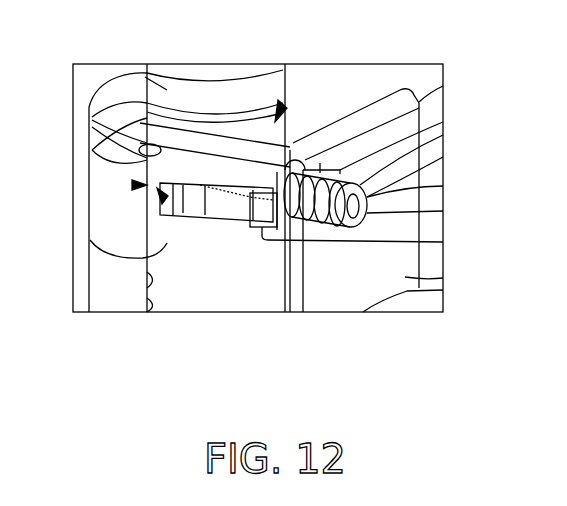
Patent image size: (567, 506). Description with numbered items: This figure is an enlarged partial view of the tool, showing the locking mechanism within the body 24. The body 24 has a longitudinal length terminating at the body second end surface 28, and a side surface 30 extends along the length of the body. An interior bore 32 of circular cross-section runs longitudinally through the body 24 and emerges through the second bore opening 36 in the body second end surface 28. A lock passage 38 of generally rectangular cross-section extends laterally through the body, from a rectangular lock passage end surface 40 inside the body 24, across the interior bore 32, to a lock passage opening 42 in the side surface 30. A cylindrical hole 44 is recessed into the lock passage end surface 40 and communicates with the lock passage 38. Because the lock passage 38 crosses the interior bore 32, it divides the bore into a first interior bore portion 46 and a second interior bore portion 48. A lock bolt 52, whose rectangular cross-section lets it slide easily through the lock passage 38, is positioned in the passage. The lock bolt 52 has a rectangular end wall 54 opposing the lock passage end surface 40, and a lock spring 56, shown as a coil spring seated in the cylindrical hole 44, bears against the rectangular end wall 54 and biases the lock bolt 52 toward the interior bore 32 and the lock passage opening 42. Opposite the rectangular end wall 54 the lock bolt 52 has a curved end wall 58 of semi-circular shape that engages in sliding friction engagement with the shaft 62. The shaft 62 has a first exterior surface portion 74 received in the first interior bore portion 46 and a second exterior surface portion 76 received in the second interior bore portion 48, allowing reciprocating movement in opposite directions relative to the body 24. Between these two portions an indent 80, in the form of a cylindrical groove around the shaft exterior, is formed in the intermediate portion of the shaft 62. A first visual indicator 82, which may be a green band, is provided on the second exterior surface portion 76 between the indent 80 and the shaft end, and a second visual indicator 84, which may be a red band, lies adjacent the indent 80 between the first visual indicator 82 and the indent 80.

The body 24 is at (443, 86).
The body second end surface 28 is at (385, 95).
The side surface 30 is at (443, 278).
The interior bore 32 is at (147, 283).
The second bore opening 36 is at (268, 168).
The lock passage 38 is at (443, 157).
The lock passage end surface 40 is at (443, 243).
The lock passage opening 42 is at (147, 226).
The cylindrical hole 44 is at (443, 215).
The first interior bore portion 46 is at (140, 308).
The second interior bore portion 48 is at (110, 153).
The lock bolt 52 is at (317, 157).
The rectangular end wall 54 is at (443, 122).
The lock spring 56 is at (443, 188).
The curved end wall 58 is at (130, 170).
The shaft 62 is at (147, 263).
The first exterior surface portion 74 is at (287, 295).
The second exterior surface portion 76 is at (210, 72).
The indent 80 is at (134, 185).
The first visual indicator 82 is at (193, 72).
The second visual indicator 84 is at (143, 72).